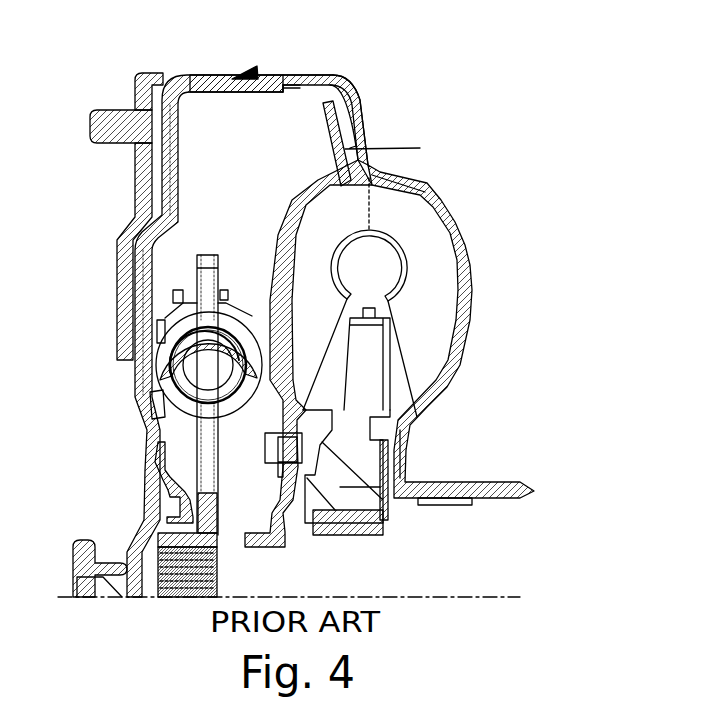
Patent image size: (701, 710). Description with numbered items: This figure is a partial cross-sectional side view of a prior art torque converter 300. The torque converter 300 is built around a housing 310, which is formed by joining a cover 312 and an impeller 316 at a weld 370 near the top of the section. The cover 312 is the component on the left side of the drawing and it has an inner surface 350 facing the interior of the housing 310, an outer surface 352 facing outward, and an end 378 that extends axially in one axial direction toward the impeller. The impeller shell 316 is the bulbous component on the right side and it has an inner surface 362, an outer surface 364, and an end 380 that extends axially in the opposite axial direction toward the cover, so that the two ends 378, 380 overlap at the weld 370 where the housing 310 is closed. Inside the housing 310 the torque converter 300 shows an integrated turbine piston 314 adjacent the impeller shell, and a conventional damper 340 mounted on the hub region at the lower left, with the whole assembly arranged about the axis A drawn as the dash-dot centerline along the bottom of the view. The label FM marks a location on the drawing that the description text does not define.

The torque converter 300 is at (440, 153).
The housing 310 is at (259, 64).
The cover 312 is at (118, 257).
The integrated turbine piston 314 is at (322, 143).
The impeller 316 is at (441, 200).
The damper 340 is at (140, 370).
The inner surface 350 is at (203, 93).
The outer surface 352 is at (148, 77).
The inner surface 362 is at (345, 82).
The outer surface 364 is at (277, 66).
The weld 370 is at (233, 75).
The end 378 is at (290, 90).
The end 380 is at (245, 72).
The friction material FM is at (345, 149).
The axis of rotation A is at (518, 597).